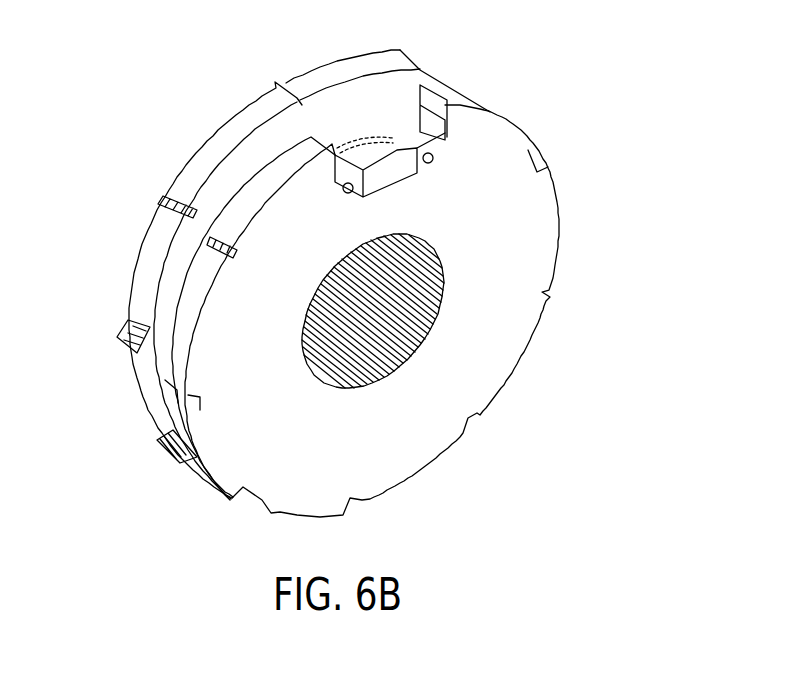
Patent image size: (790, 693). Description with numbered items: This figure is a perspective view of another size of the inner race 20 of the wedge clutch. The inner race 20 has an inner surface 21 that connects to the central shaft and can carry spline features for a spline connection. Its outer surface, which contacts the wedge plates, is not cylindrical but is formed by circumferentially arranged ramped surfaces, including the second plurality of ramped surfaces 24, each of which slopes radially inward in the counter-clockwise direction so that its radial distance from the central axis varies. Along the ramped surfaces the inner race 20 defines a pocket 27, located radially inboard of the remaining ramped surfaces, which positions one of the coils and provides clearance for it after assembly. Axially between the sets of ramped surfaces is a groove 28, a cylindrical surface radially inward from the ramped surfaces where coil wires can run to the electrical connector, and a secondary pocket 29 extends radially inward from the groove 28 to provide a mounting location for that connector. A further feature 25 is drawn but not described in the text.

The inner race 20 is at (369, 260).
The inner surface 21 is at (393, 370).
The second plurality of ramped surfaces 24 is at (147, 270).
The inner ring 25 is at (188, 325).
The pocket 27 is at (452, 118).
The groove 28 is at (365, 160).
The secondary pocket 29 is at (377, 180).